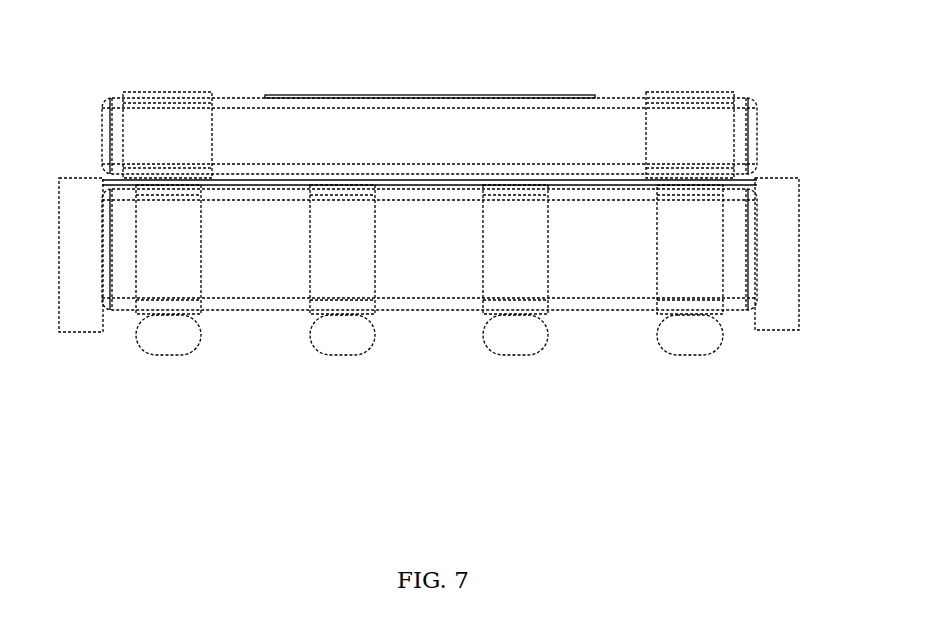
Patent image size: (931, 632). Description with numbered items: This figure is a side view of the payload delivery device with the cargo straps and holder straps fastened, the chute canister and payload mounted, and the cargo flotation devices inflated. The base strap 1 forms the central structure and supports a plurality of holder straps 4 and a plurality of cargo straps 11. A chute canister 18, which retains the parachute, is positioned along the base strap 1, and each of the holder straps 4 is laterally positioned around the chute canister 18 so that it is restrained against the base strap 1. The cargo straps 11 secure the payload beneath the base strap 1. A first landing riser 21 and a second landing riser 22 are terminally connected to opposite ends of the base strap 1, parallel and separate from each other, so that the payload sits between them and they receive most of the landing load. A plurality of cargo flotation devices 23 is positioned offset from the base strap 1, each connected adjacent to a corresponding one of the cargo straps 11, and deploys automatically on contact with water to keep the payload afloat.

The base strap 1 is at (590, 180).
The plurality of holder straps 4 is at (157, 74).
The plurality of cargo straps 11 is at (210, 277).
The chute canister 18 is at (302, 100).
The first landing riser 21 is at (785, 324).
The second landing riser 22 is at (83, 320).
The plurality of cargo flotation devices 23 is at (170, 347).